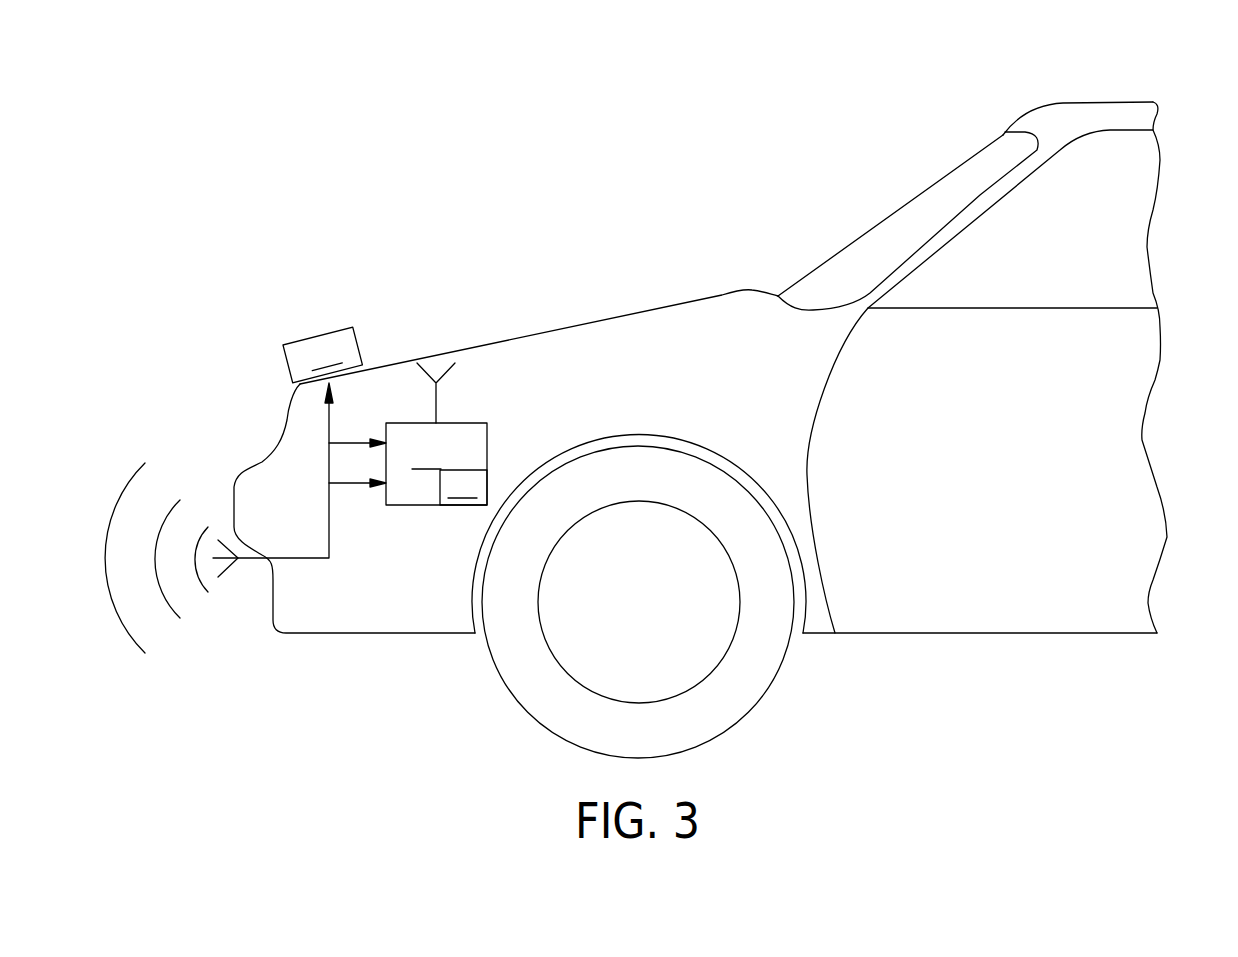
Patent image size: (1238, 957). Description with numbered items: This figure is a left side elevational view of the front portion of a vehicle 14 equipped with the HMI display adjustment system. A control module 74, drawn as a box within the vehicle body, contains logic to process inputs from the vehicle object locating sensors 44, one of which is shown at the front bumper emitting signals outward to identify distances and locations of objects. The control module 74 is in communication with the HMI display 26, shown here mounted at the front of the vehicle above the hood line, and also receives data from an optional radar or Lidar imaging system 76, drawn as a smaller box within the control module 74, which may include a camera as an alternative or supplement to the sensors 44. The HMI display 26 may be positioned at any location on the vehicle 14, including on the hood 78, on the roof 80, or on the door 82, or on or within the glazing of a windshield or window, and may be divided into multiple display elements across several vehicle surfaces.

The vehicle 14 is at (728, 300).
The HMI display 26 is at (287, 442).
The vehicle object locating sensors 44 is at (253, 562).
The control module 74 is at (408, 434).
The radar or Lidar imaging system 76 is at (463, 487).
The hood 78 is at (437, 350).
The roof 80 is at (1053, 102).
The door 82 is at (1135, 338).